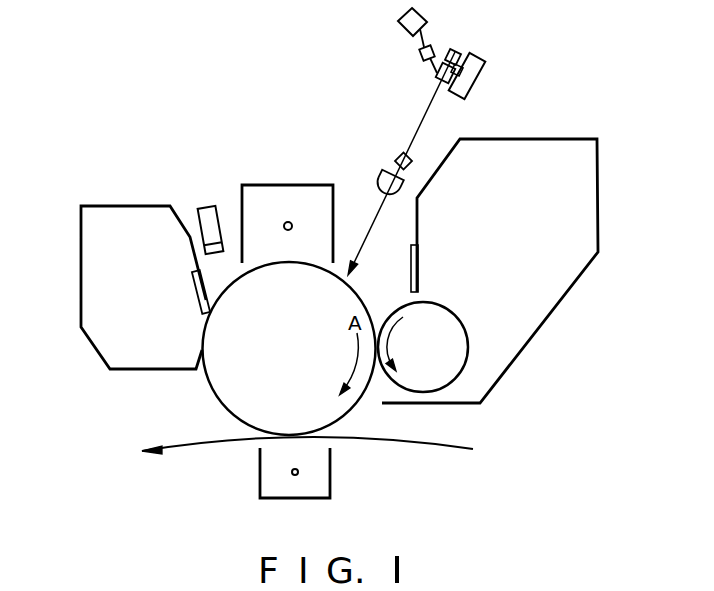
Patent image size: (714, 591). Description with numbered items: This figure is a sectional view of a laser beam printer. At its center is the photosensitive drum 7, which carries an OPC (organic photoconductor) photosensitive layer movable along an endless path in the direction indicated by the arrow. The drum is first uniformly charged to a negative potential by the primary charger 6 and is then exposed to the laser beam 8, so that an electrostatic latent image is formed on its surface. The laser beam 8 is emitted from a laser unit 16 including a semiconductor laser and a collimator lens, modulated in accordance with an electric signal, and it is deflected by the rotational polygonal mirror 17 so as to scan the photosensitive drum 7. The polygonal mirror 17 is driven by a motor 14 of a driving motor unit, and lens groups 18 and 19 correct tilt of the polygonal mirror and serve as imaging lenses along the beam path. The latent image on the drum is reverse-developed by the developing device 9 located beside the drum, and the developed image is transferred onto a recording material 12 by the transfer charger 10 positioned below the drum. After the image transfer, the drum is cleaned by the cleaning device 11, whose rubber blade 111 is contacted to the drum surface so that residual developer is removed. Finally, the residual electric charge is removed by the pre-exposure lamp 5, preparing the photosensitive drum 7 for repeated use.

The pre-exposure lamp 5 is at (201, 207).
The primary charger 6 is at (287, 198).
The photosensitive drum 7 is at (216, 400).
The laser beam 8 is at (421, 121).
The developing device 9 is at (587, 233).
The transfer charger 10 is at (323, 477).
The cleaning device 11 is at (97, 287).
The rubber blade 111 is at (193, 298).
The recording material 12 is at (193, 446).
The motor 14 is at (478, 77).
The laser source 16 is at (405, 23).
The rotational polygonal mirror 17 is at (452, 54).
The lens group 18 is at (431, 49).
The lens group 19 is at (381, 173).